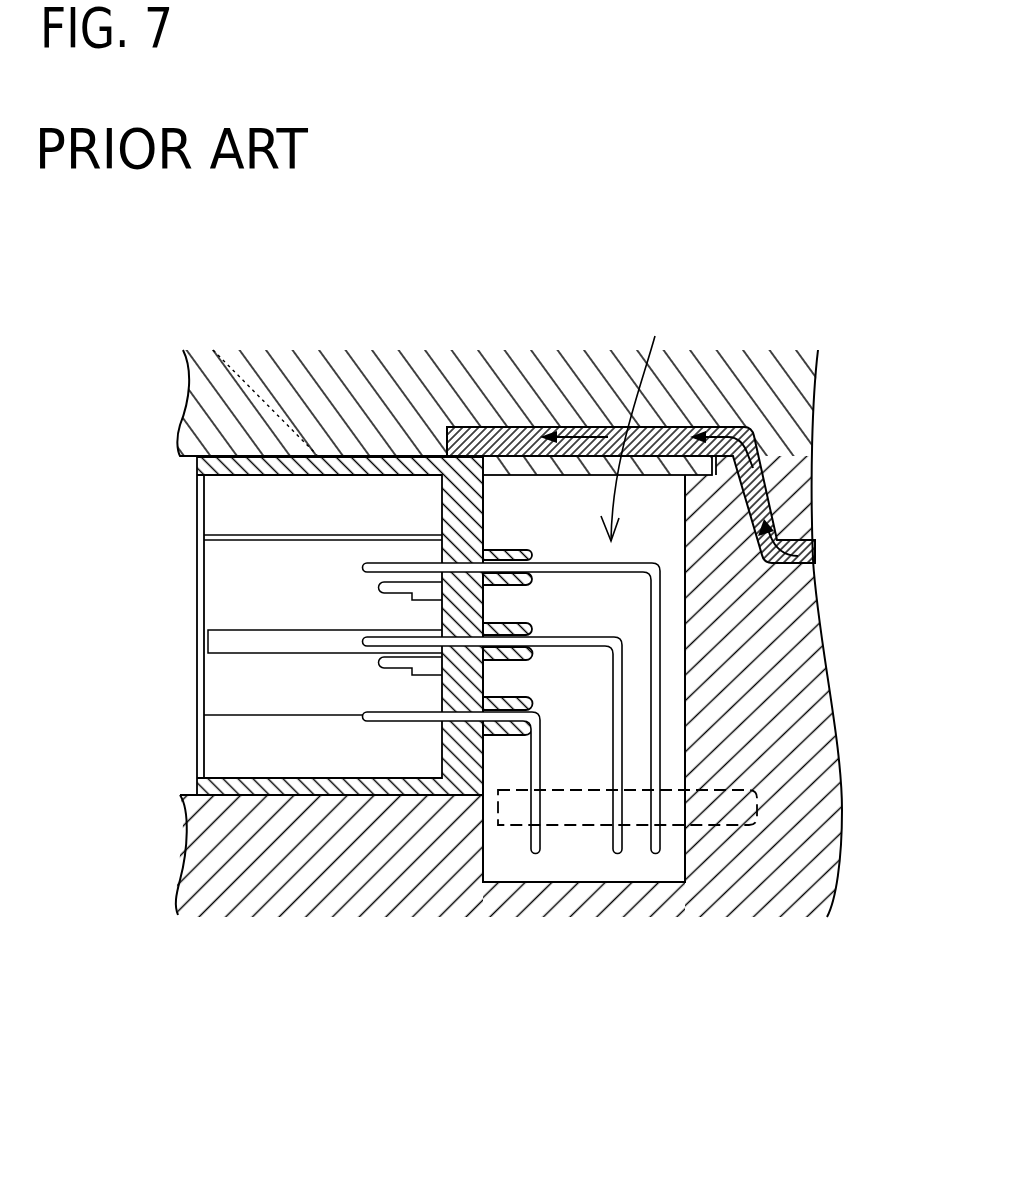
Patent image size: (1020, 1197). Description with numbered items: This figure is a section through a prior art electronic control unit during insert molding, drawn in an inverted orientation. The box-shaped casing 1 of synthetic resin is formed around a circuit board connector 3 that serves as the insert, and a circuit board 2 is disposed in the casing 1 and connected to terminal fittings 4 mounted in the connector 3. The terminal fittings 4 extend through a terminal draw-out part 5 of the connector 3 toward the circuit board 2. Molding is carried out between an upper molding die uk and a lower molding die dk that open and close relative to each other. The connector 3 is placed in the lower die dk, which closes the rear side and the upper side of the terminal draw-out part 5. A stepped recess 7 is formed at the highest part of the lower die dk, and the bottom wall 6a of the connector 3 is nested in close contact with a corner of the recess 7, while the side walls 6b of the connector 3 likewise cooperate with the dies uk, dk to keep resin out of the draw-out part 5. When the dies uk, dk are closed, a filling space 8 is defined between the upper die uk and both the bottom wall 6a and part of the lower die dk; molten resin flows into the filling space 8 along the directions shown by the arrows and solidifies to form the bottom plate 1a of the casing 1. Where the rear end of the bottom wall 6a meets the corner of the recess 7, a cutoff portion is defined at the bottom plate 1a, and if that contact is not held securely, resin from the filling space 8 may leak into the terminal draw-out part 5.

The casing 1 is at (767, 480).
The bottom plate 1a is at (487, 427).
The circuit board 2 is at (587, 825).
The circuit board connector 3 is at (357, 787).
The terminal fittings 4 is at (655, 703).
The terminal draw-out part 5 is at (633, 425).
The bottom wall 6a is at (668, 465).
The side walls 6b is at (562, 862).
The stepped recess 7 is at (745, 427).
The filling space 8 is at (597, 427).
The upper molding die uk is at (515, 372).
The lower molding die dk is at (745, 885).